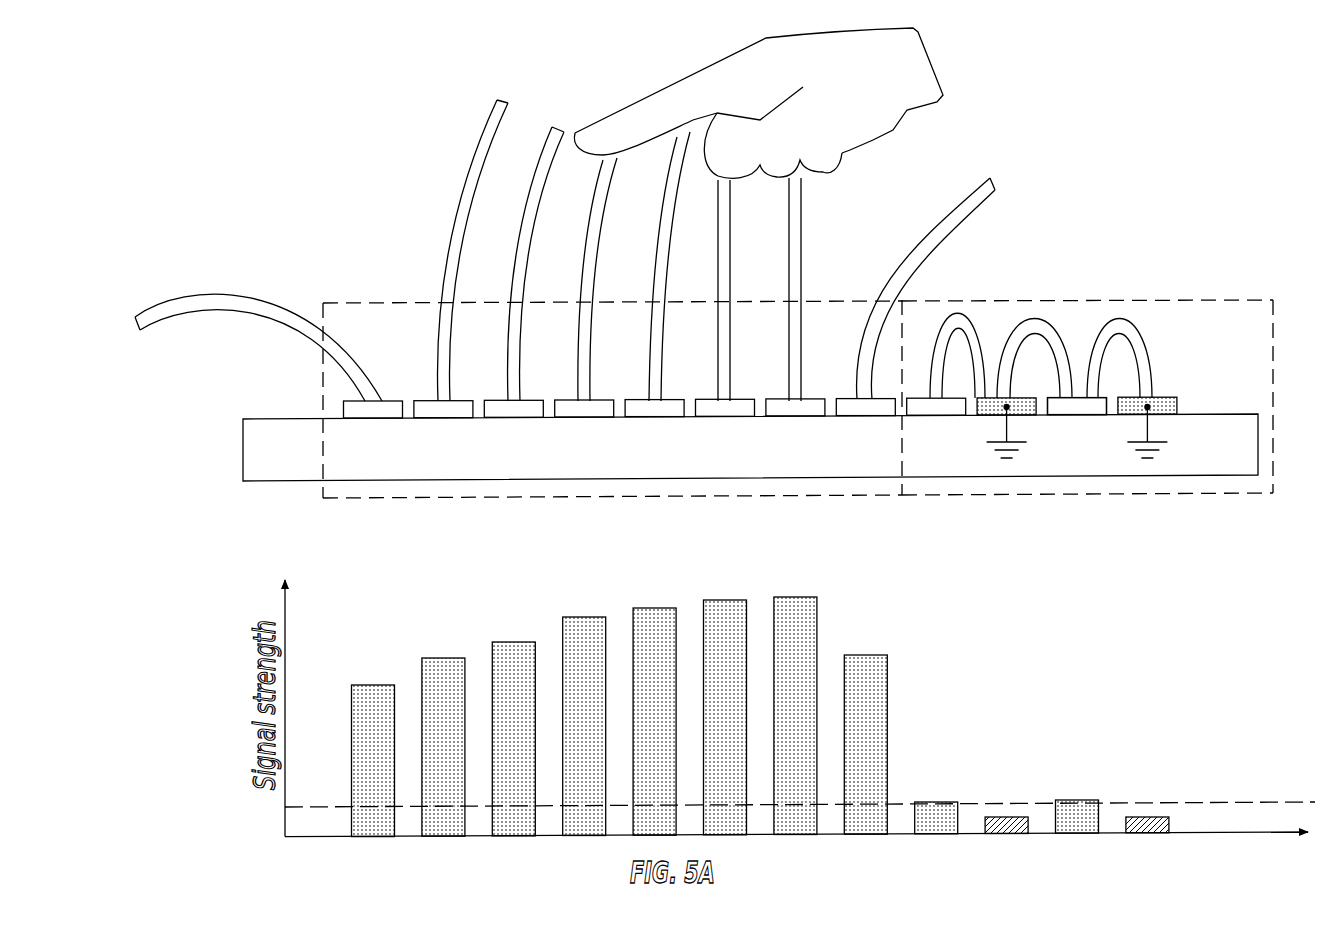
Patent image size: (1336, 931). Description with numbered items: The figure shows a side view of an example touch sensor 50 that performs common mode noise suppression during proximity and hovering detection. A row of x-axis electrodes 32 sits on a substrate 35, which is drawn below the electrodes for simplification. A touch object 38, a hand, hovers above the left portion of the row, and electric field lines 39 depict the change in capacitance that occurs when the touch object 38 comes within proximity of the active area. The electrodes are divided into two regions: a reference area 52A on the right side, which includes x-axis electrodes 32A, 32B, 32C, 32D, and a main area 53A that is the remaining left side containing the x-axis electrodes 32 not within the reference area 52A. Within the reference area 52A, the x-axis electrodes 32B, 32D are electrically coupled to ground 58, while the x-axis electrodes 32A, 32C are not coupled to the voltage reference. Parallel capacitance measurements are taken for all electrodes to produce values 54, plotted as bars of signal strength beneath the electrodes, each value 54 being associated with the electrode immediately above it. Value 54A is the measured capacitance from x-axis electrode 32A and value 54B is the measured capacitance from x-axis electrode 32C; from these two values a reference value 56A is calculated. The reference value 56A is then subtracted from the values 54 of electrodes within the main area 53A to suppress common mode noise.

The touch sensor 50 is at (321, 127).
The touch object 38 is at (913, 73).
The electric field lines 39 is at (208, 292).
The x-axis electrodes 32 is at (342, 427).
The x-axis electrode 32A is at (993, 396).
The x-axis electrode 32B is at (1003, 396).
The x-axis electrode 32C is at (1087, 405).
The x-axis electrode 32D is at (1160, 396).
The substrate 35 is at (257, 450).
The reference area 52A is at (1197, 298).
The main area 53A is at (801, 488).
The ground 58 is at (1145, 422).
The values 54 is at (583, 633).
The value 54A is at (937, 834).
The value 54B is at (1077, 834).
The reference value 56A is at (1243, 760).